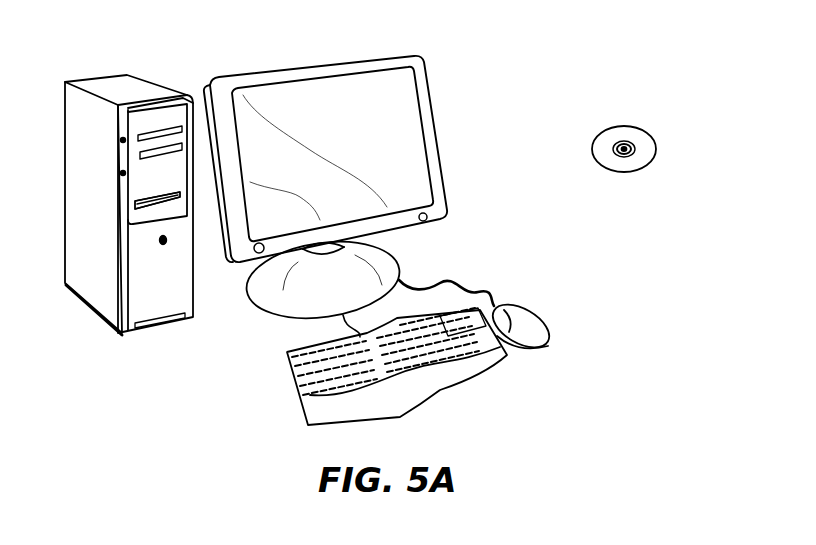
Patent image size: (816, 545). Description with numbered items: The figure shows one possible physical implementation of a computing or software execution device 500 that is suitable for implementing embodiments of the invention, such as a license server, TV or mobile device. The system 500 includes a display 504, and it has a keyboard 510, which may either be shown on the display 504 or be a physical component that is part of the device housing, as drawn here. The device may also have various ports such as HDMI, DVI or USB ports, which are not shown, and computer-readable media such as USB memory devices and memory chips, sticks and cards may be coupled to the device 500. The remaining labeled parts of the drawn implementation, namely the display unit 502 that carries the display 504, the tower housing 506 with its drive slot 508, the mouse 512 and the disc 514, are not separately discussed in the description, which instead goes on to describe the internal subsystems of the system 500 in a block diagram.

The computing or software execution device 500 is at (554, 38).
The display monitor 502 is at (438, 157).
The display 504 is at (395, 95).
The computer tower / processing unit 506 is at (115, 88).
The disk drive slot 508 is at (177, 200).
The keyboard 510 is at (300, 398).
The mouse 512 is at (542, 312).
The optical disc 514 is at (636, 128).